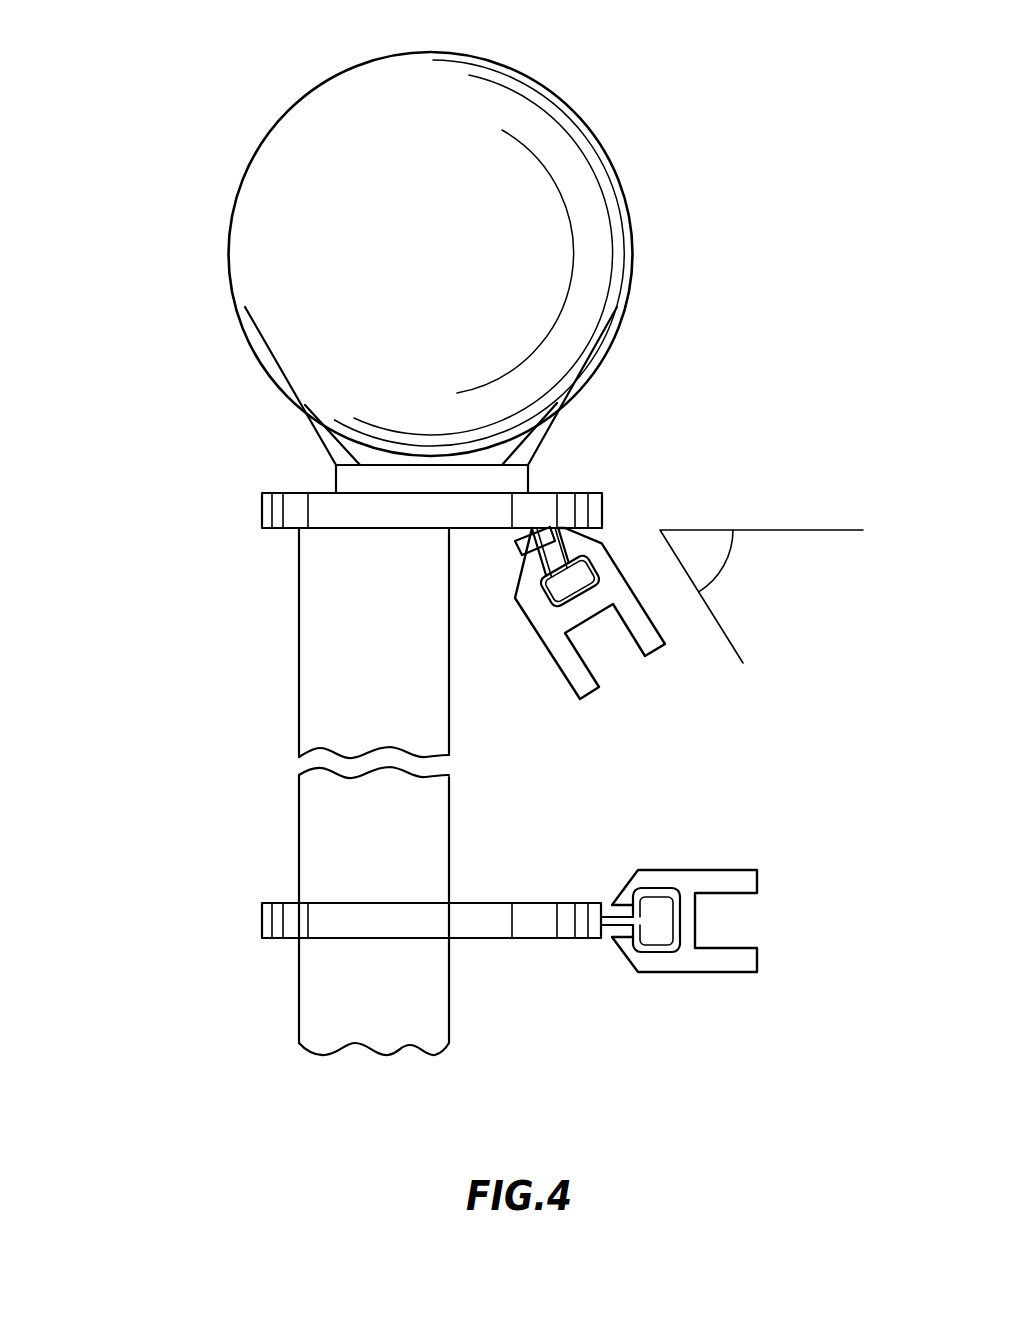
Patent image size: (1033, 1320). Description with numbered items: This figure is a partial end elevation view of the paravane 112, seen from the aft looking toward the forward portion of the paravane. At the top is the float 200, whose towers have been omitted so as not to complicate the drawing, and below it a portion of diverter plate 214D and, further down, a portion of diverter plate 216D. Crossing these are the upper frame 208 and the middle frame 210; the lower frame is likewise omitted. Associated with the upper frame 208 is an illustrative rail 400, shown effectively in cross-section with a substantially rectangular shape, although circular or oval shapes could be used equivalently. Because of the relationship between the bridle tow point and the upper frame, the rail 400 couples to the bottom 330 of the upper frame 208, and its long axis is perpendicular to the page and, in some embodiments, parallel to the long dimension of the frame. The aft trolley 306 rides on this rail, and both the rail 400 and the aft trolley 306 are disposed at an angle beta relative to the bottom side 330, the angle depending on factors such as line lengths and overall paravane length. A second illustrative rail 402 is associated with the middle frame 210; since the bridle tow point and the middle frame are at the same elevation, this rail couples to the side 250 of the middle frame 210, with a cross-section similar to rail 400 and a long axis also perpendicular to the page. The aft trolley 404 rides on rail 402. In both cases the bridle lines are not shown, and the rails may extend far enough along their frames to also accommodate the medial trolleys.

The paravane 112 is at (205, 82).
The float 200 is at (455, 250).
The upper frame 208 is at (262, 510).
The middle frame 210 is at (262, 921).
The diverter plate 214D is at (410, 670).
The diverter plate 216D is at (382, 1028).
The side of the middle frame 250 is at (618, 917).
The aft trolley 306 is at (643, 528).
The bottom of the upper frame 330 is at (485, 529).
The rail 400 is at (570, 585).
The rail 402 is at (657, 915).
The aft trolley 404 is at (744, 868).